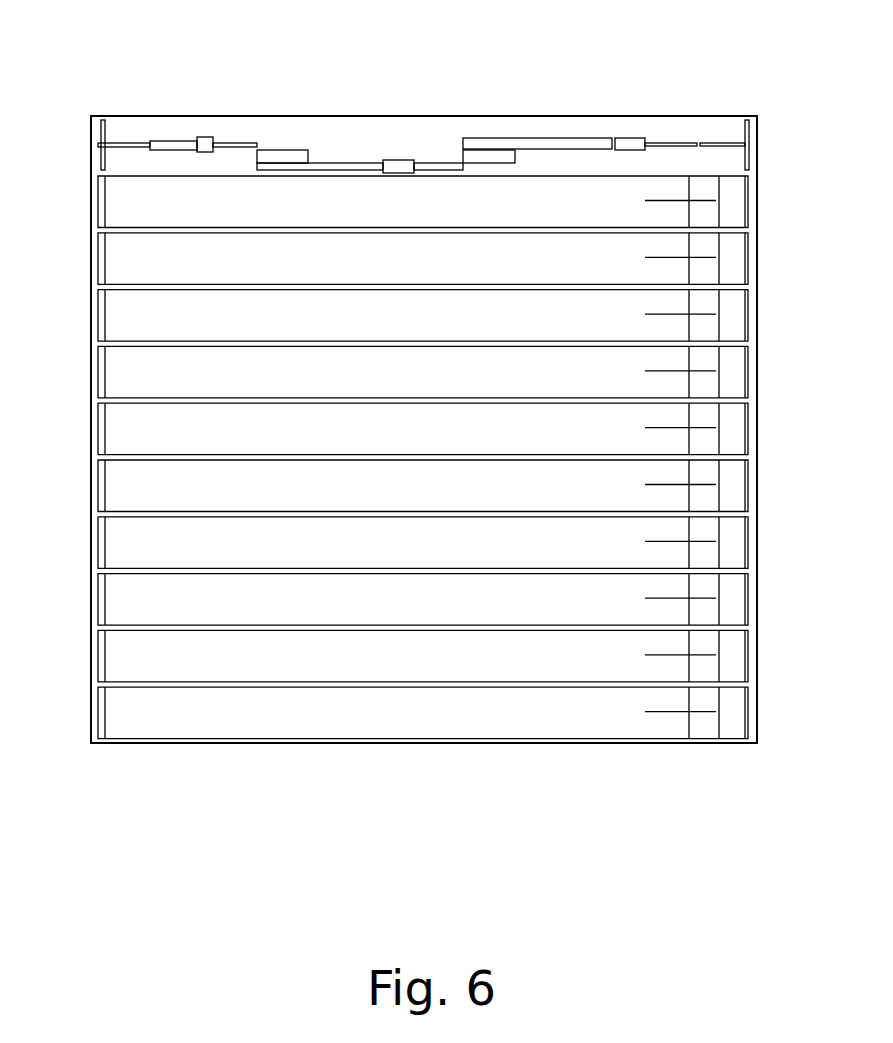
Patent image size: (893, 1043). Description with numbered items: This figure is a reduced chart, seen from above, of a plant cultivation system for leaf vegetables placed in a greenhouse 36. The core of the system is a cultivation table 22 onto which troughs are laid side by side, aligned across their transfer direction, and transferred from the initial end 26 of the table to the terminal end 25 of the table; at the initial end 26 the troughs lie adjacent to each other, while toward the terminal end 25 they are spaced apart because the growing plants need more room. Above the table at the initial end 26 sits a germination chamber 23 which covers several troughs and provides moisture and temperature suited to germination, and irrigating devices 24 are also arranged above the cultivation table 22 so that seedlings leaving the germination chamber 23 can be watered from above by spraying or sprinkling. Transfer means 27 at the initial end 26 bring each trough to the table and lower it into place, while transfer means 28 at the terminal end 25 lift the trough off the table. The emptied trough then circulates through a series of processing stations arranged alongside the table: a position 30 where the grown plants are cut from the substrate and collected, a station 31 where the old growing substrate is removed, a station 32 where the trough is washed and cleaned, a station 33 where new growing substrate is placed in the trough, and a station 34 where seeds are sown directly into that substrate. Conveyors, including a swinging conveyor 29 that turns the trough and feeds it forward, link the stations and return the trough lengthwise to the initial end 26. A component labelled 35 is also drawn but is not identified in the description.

The cultivation table 22 is at (410, 718).
The germination chamber 23 is at (733, 735).
The irrigating devices 24 is at (688, 735).
The terminal end of the table 25 is at (139, 755).
The initial end of the table 26 is at (704, 783).
The transfer means 27 is at (745, 205).
The transfer means 28 is at (100, 203).
The swinging conveyor 29 is at (120, 144).
The position for collecting plants 30 is at (205, 138).
The station for removing growing substrate 31 is at (300, 151).
The washing and cleaning station 32 is at (404, 160).
The station for placing new growing substrate 33 is at (503, 148).
The sowing station 34 is at (630, 142).
The right connector bar 35 is at (720, 145).
The greenhouse 36 is at (565, 116).